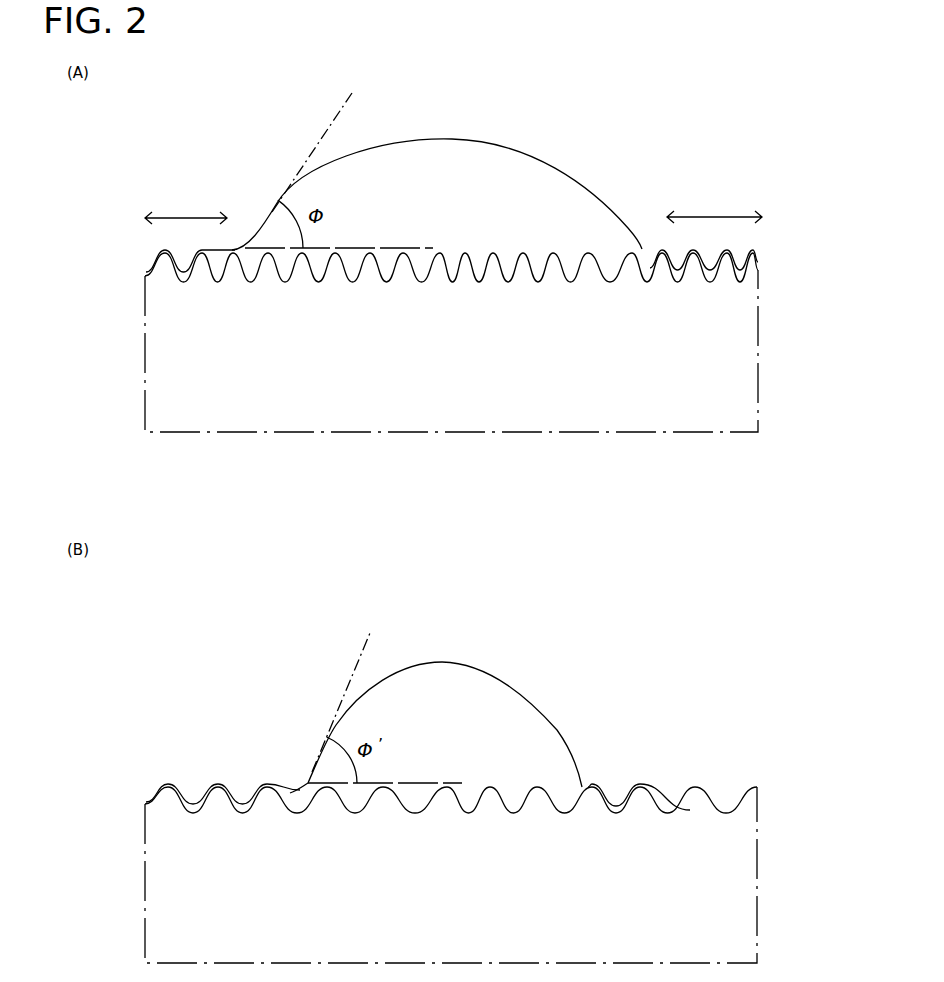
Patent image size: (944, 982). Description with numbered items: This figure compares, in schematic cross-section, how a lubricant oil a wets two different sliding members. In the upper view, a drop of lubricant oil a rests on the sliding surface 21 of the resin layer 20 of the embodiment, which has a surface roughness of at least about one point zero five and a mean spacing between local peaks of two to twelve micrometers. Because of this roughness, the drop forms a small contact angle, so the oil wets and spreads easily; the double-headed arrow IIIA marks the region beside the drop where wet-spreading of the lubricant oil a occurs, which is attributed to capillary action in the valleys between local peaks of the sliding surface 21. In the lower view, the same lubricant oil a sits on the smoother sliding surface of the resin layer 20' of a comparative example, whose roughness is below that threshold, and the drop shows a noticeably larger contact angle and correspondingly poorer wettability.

The resin layer 20 is at (499, 351).
The sliding surface 21 is at (480, 257).
The resin layer of comparative example 20' is at (500, 873).
The lubricant oil a is at (543, 193).
The double-headed arrow IIIA is at (453, 205).